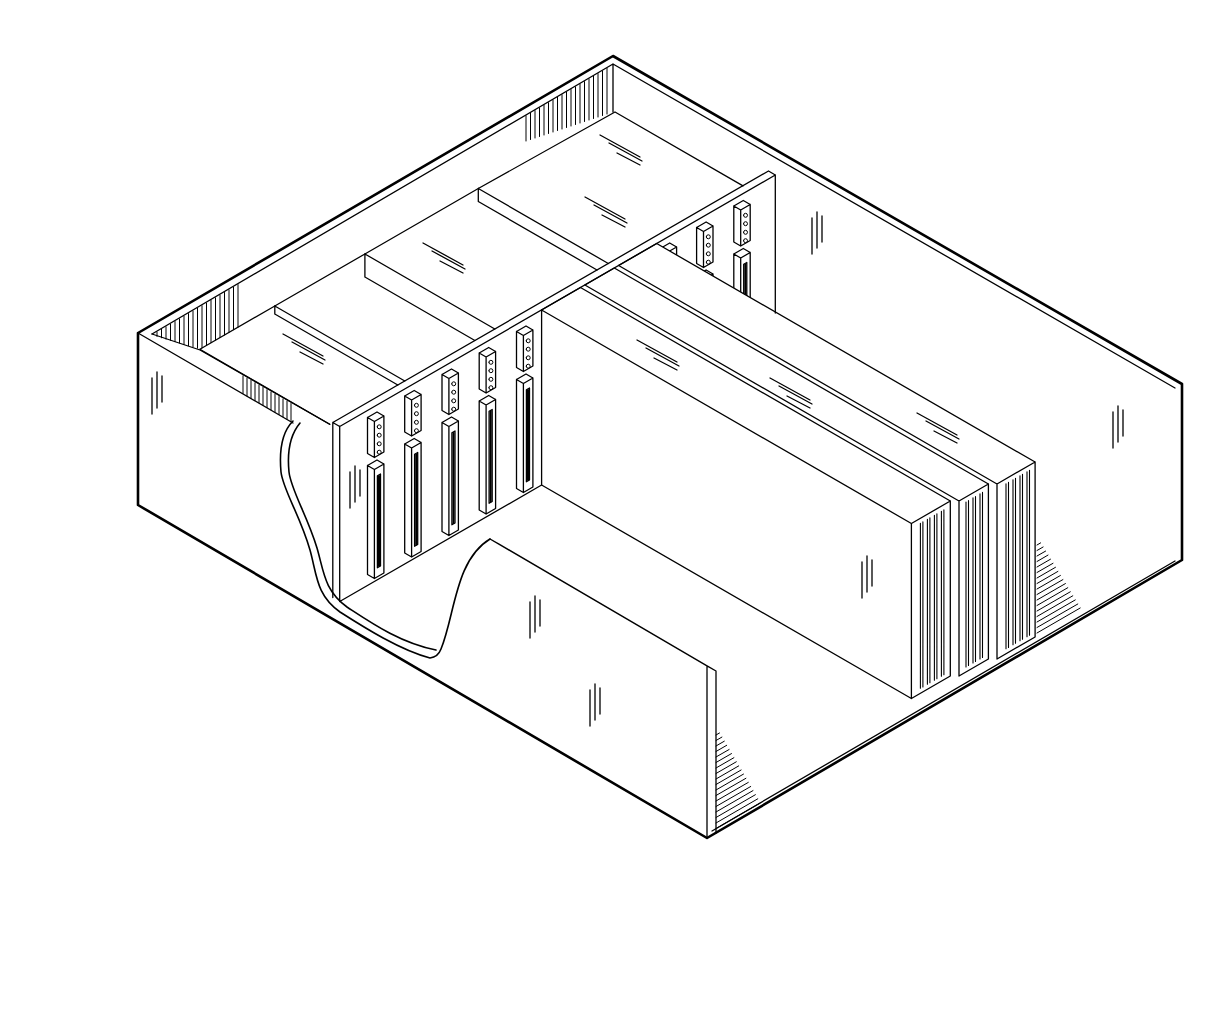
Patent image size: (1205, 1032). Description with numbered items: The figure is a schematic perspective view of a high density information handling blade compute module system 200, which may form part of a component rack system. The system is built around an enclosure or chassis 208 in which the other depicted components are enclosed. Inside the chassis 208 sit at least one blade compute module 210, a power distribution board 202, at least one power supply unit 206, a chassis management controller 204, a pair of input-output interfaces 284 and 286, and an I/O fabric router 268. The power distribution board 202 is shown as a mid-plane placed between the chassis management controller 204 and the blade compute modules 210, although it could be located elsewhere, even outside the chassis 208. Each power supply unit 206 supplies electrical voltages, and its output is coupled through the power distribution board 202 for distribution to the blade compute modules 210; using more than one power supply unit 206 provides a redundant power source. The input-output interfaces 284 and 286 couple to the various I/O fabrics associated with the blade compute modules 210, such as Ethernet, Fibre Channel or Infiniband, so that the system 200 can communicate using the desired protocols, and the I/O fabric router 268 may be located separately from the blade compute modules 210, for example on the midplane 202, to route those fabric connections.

The information handling blade compute module system 200 is at (404, 714).
The power distribution board 202 is at (737, 194).
The chassis management controller 204 is at (533, 292).
The power supply unit 206 is at (681, 203).
The chassis 208 is at (920, 233).
The blade compute module 210 is at (1016, 640).
The I/O fabric router 268 is at (611, 238).
The input-output interface 284 is at (409, 345).
The input-output interface 286 is at (333, 395).